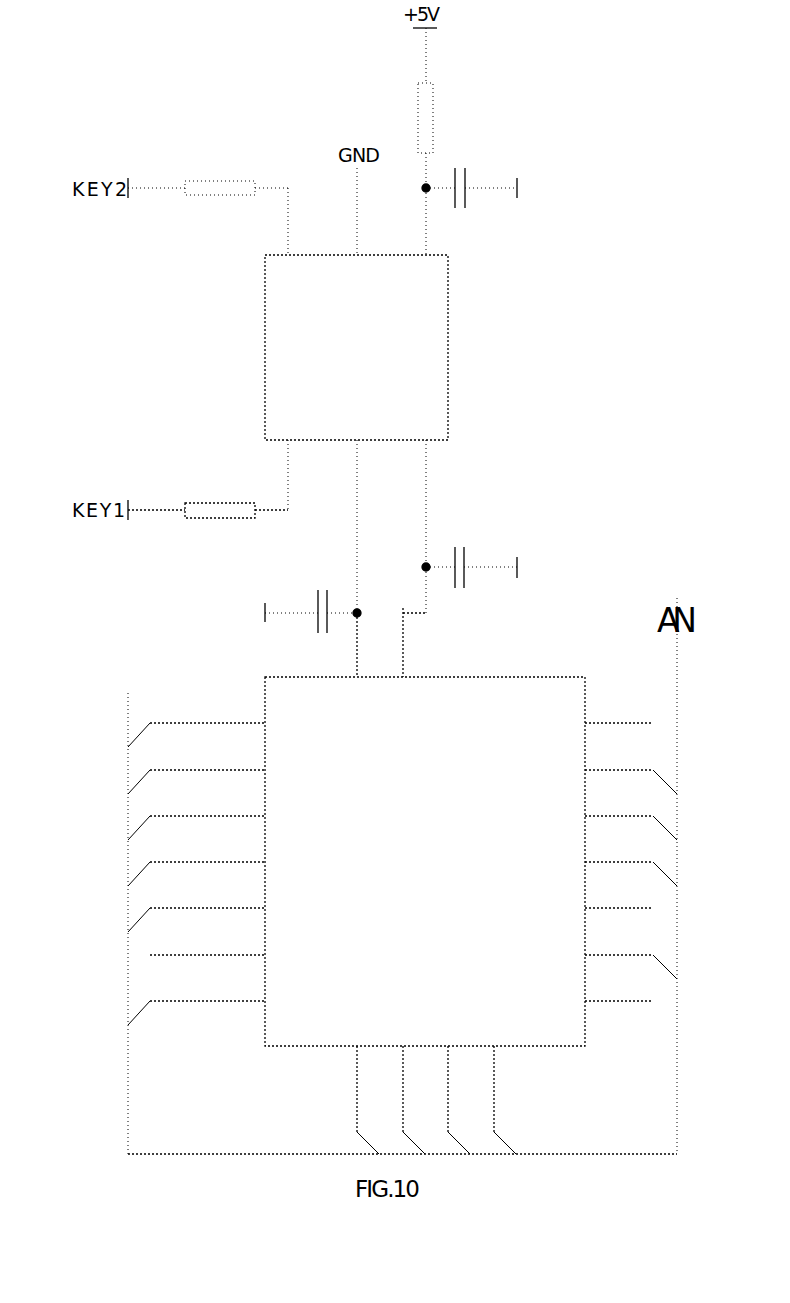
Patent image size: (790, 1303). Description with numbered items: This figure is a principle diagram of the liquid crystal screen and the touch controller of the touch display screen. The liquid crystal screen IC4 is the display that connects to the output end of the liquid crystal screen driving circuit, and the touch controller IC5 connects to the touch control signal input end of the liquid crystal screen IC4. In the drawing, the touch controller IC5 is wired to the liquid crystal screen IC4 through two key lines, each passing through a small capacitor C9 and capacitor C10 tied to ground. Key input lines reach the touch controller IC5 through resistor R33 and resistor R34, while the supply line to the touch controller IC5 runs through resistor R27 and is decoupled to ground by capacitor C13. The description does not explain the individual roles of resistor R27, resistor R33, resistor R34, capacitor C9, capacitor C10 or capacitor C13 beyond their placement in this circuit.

The resistor R27 1K R27 is at (444, 118).
The resistor R33 1K R33 is at (218, 187).
The resistor R34 1K R34 is at (218, 511).
The capacitor C9 5P C9 is at (289, 587).
The capacitor C10 5P C10 is at (495, 542).
The capacitor C13 104 C13 is at (495, 189).
The liquid crystal screen IC4 is at (425, 861).
The touch controller IC5 is at (356, 347).